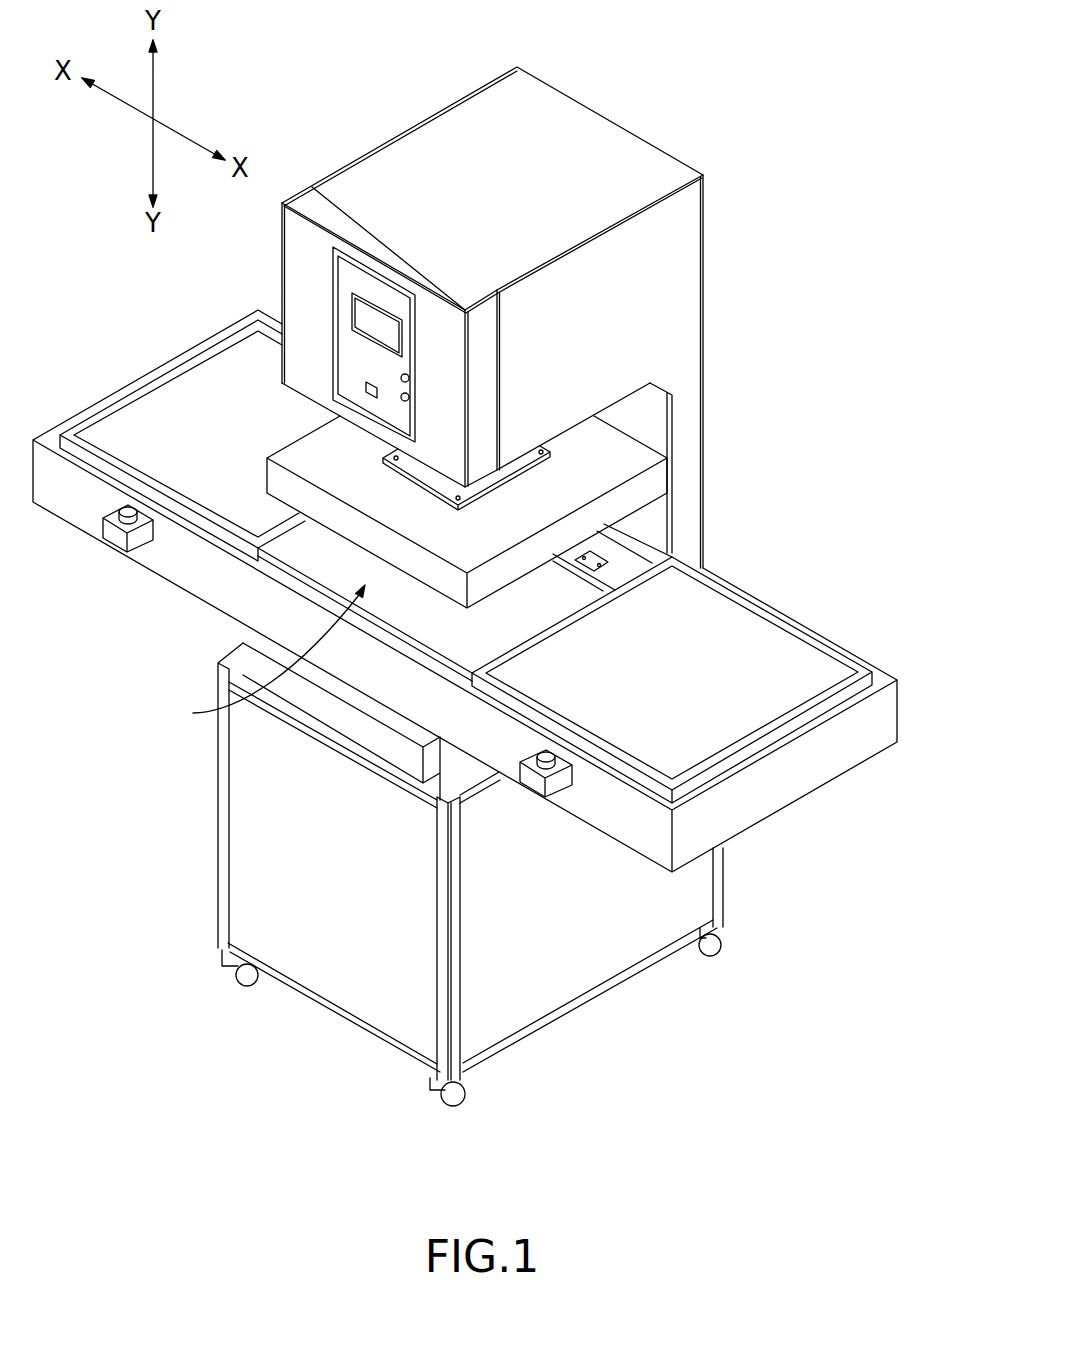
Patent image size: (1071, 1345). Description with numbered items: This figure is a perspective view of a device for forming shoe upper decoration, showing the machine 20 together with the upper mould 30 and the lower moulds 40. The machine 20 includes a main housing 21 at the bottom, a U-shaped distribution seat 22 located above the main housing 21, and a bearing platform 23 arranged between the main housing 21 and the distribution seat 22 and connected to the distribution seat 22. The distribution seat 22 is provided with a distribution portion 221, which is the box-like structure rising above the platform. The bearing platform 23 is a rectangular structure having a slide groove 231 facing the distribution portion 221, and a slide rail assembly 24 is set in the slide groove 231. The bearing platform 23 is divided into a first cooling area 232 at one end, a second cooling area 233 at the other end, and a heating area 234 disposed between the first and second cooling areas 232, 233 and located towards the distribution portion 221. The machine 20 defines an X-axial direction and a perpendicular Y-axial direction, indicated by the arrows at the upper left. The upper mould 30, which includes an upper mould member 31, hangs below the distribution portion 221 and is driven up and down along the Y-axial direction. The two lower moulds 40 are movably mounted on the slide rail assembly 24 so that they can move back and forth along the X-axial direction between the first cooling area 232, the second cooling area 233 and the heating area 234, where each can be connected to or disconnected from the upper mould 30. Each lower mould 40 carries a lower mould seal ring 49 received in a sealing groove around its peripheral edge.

The machine 20 is at (742, 279).
The main housing 21 is at (700, 907).
The U-shaped distribution seat 22 is at (703, 370).
The distribution portion 221 is at (402, 152).
The bearing platform 23 is at (897, 715).
The slide groove 231 is at (317, 577).
The first cooling area 232 is at (78, 490).
The second cooling area 233 is at (619, 802).
The heating area 234 is at (254, 658).
The slide rail assembly 24 is at (640, 560).
The upper mould 30 is at (687, 473).
The upper mould member 31 is at (645, 488).
The lower mould 40 is at (789, 589).
The lower mould seal ring 49 is at (180, 395).